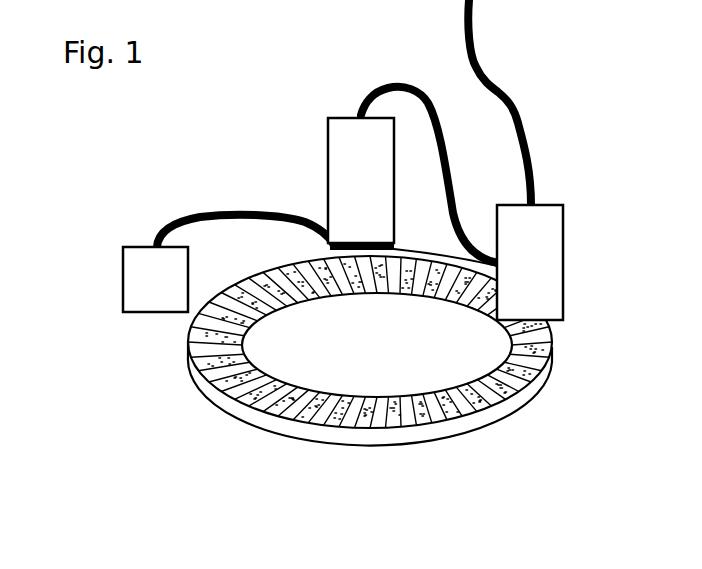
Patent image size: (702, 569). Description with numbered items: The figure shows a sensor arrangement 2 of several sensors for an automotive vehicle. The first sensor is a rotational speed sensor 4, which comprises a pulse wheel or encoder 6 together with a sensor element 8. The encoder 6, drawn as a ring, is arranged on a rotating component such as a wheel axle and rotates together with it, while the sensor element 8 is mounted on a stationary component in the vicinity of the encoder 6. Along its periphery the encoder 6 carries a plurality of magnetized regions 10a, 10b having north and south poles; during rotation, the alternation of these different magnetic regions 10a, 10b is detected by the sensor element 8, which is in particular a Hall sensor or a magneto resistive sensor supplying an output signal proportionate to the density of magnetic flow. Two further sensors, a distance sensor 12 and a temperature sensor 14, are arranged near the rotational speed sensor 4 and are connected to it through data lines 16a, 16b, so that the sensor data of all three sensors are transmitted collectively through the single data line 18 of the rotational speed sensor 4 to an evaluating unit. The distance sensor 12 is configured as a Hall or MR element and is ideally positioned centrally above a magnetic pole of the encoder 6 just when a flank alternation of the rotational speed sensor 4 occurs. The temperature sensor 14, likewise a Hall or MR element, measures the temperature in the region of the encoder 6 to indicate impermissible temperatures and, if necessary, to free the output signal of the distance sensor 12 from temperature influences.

The sensor arrangement 2 is at (239, 84).
The rotational speed sensor 4 is at (590, 338).
The encoder 6 is at (355, 435).
The sensor element 8 is at (564, 250).
The magnetized region 10a is at (428, 405).
The magnetized region 10b is at (443, 408).
The distance sensor 12 is at (333, 135).
The temperature sensor 14 is at (127, 273).
The data line 16a is at (393, 83).
The data line 16b is at (208, 217).
The data line 18 is at (474, 27).